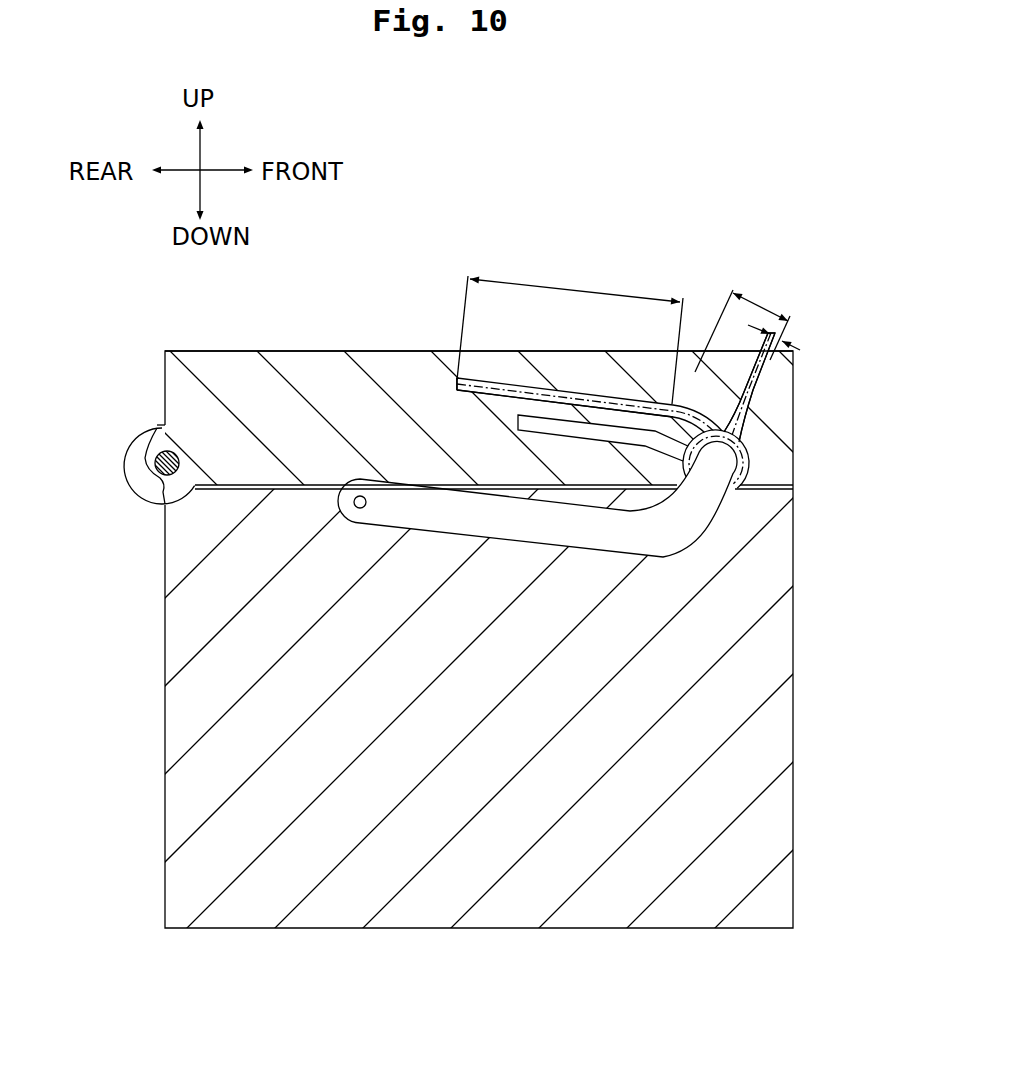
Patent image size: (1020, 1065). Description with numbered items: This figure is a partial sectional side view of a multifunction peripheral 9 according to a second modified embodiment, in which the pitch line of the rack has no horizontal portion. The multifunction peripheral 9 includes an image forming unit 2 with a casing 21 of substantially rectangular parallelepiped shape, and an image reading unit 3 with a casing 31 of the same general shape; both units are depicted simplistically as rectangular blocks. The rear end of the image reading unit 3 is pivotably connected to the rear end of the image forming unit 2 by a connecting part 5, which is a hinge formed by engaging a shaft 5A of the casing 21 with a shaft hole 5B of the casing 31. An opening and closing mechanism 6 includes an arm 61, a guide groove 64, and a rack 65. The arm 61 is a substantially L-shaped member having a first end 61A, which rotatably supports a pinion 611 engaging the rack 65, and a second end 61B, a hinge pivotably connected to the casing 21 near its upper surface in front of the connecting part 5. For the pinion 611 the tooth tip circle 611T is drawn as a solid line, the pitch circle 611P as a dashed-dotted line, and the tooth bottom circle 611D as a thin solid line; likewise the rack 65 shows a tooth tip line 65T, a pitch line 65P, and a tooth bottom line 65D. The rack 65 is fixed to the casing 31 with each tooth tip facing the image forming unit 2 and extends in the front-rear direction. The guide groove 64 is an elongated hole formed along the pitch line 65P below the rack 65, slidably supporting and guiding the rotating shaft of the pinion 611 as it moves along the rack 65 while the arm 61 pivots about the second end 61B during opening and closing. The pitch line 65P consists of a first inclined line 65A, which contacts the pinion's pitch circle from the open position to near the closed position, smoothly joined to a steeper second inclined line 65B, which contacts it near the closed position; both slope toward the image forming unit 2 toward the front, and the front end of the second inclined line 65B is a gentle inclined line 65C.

The image forming unit 2 is at (150, 686).
The casing 21 is at (165, 788).
The image reading unit 3 is at (349, 307).
The casing 31 is at (237, 351).
The connecting part 5 is at (130, 486).
The shaft 5A is at (153, 461).
The shaft hole 5B is at (158, 503).
The opening and closing mechanism 6 is at (806, 493).
The arm 61 is at (440, 512).
The first end 61A is at (724, 463).
The second end 61B is at (353, 502).
The pinion 611 is at (728, 487).
The tooth tip circle 611T is at (745, 426).
The pitch circle 611P is at (742, 447).
The tooth bottom circle 611D is at (750, 456).
The guide groove 64 is at (632, 427).
The rack 65 is at (593, 378).
The tooth tip line 65T is at (470, 383).
The pitch line 65P is at (507, 377).
The tooth bottom line 65D is at (548, 390).
The first inclined line 65A is at (570, 331).
The second inclined line 65B is at (743, 323).
The gentle inclined line 65C is at (794, 329).
The multifunction peripheral 9 is at (414, 253).